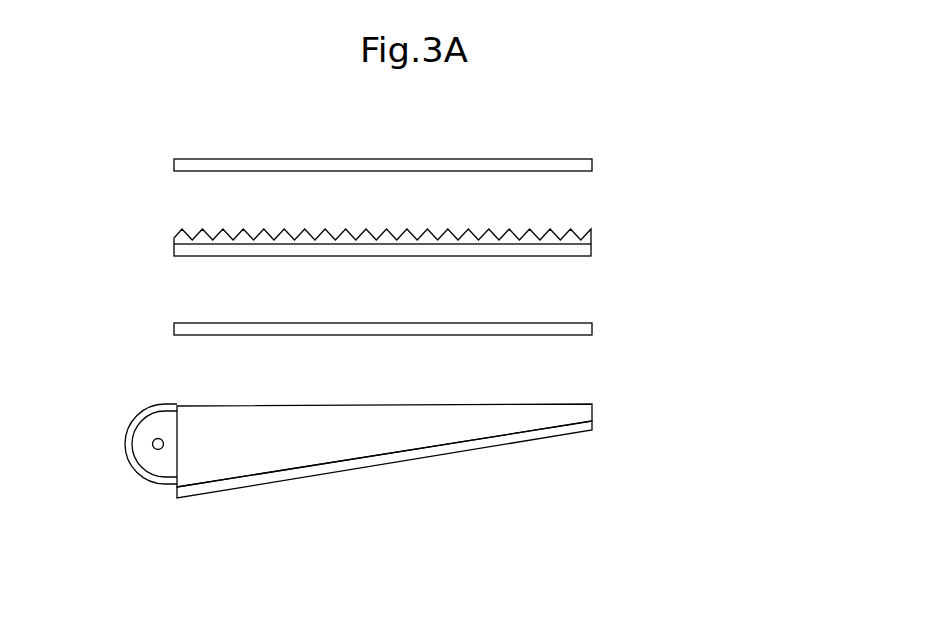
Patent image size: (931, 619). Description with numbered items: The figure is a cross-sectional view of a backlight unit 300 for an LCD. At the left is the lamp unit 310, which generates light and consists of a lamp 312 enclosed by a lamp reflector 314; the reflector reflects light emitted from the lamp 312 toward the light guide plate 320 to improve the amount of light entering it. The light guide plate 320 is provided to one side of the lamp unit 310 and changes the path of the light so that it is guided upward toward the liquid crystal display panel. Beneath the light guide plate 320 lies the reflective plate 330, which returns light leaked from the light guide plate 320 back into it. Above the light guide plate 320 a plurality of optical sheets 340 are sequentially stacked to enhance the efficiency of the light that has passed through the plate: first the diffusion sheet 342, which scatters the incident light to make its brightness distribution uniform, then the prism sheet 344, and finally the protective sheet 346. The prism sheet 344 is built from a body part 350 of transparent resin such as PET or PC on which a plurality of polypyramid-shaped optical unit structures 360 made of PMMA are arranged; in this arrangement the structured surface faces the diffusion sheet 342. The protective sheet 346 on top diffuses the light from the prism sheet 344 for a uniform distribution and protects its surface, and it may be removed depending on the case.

The backlight unit 300 is at (778, 222).
The lamp unit 310 is at (108, 493).
The lamp 312 is at (152, 445).
The lamp reflector 314 is at (145, 484).
The light guide plate 320 is at (592, 408).
The reflective plate 330 is at (592, 425).
The optical sheets 340 is at (707, 170).
The diffusion sheet 342 is at (592, 329).
The prism sheet 344 is at (393, 211).
The protective sheet 346 is at (592, 165).
The body part 350 is at (173, 254).
The optical unit structures 360 is at (186, 224).